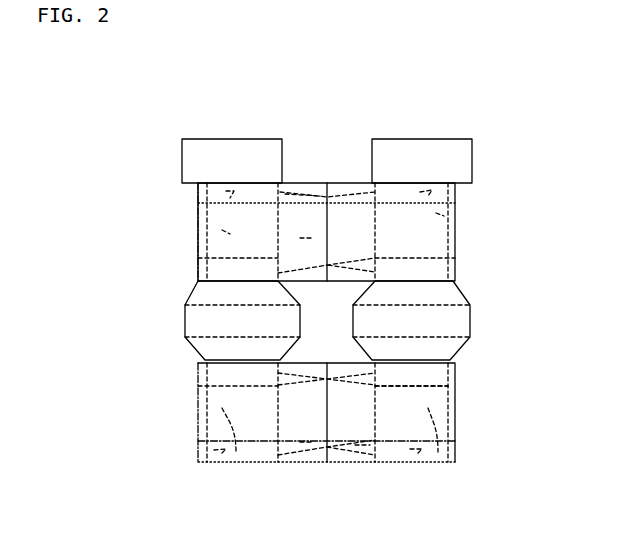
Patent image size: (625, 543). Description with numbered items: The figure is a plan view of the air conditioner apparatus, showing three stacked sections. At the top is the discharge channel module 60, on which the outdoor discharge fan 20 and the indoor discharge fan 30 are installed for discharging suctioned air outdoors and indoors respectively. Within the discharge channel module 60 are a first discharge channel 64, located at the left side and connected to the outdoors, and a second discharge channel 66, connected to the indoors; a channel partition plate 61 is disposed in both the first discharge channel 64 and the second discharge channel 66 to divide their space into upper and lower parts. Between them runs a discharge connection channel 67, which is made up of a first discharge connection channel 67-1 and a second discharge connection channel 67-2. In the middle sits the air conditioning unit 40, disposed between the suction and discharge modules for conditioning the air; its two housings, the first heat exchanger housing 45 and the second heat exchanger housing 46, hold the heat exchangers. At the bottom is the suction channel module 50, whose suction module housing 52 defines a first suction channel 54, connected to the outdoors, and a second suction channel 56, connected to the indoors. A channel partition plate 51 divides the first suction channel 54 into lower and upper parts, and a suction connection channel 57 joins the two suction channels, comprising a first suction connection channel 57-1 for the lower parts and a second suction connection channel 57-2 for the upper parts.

The outdoor discharge fan 20 is at (244, 140).
The indoor discharge fan 30 is at (423, 140).
The air conditioning unit 40 is at (330, 313).
The first heat exchanger housing 45 is at (197, 323).
The second heat exchanger housing 46 is at (463, 318).
The suction channel module 50 is at (462, 443).
The channel partition plate 51 is at (236, 455).
The suction module housing 52 is at (456, 388).
The first suction channel 54 is at (222, 454).
The second suction channel 56 is at (418, 454).
The suction connection channel 57 is at (341, 492).
The first suction connection channel 57-1 is at (367, 455).
The second suction connection channel 57-2 is at (307, 455).
The discharge channel module 60 is at (462, 249).
The channel partition plate 61 is at (228, 233).
The first discharge channel 64 is at (230, 193).
The second discharge channel 66 is at (425, 193).
The discharge connection channel 67 is at (337, 71).
The first discharge connection channel 67-1 is at (292, 195).
The second discharge connection channel 67-2 is at (303, 238).